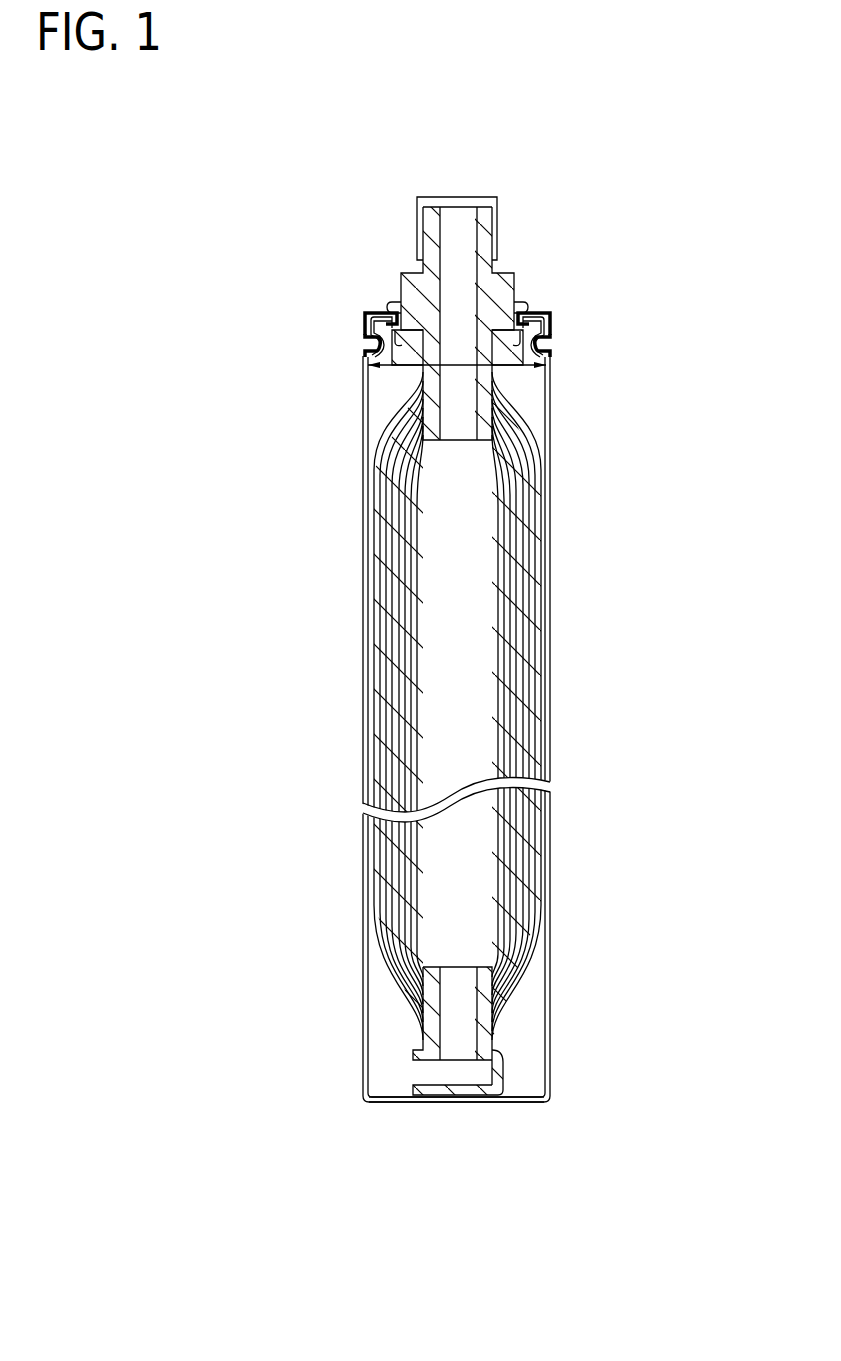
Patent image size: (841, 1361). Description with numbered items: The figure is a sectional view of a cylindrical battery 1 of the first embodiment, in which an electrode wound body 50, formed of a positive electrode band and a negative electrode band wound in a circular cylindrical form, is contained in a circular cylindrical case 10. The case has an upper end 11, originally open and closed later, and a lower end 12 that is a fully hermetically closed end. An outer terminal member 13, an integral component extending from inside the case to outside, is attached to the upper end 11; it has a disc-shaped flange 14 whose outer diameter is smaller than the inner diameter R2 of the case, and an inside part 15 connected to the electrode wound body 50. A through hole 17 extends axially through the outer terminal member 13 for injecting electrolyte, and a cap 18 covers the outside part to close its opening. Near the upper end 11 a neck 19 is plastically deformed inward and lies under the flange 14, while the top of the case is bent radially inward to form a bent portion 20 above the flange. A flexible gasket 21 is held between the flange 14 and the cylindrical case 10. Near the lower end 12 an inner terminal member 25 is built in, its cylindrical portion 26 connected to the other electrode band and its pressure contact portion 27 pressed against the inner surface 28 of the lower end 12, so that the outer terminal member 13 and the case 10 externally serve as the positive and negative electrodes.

The cylindrical battery 1 is at (648, 303).
The cylindrical case 10 is at (550, 566).
The upper end 11 is at (291, 288).
The lower end 12 is at (350, 1152).
The outer terminal member 13 is at (503, 273).
The flange 14 is at (362, 325).
The inside part 15 is at (482, 418).
The through hole 17 is at (447, 279).
The cap 18 is at (462, 200).
The neck 19 is at (542, 340).
The bent portion 20 is at (527, 310).
The gasket 21 is at (390, 306).
The inner terminal member 25 is at (296, 1002).
The cylindrical portion 26 is at (423, 1040).
The pressure contact portion 27 is at (428, 1088).
The inner surface 28 is at (532, 1088).
The electrode wound body 50 is at (400, 575).
The inner diameter R2 is at (372, 367).